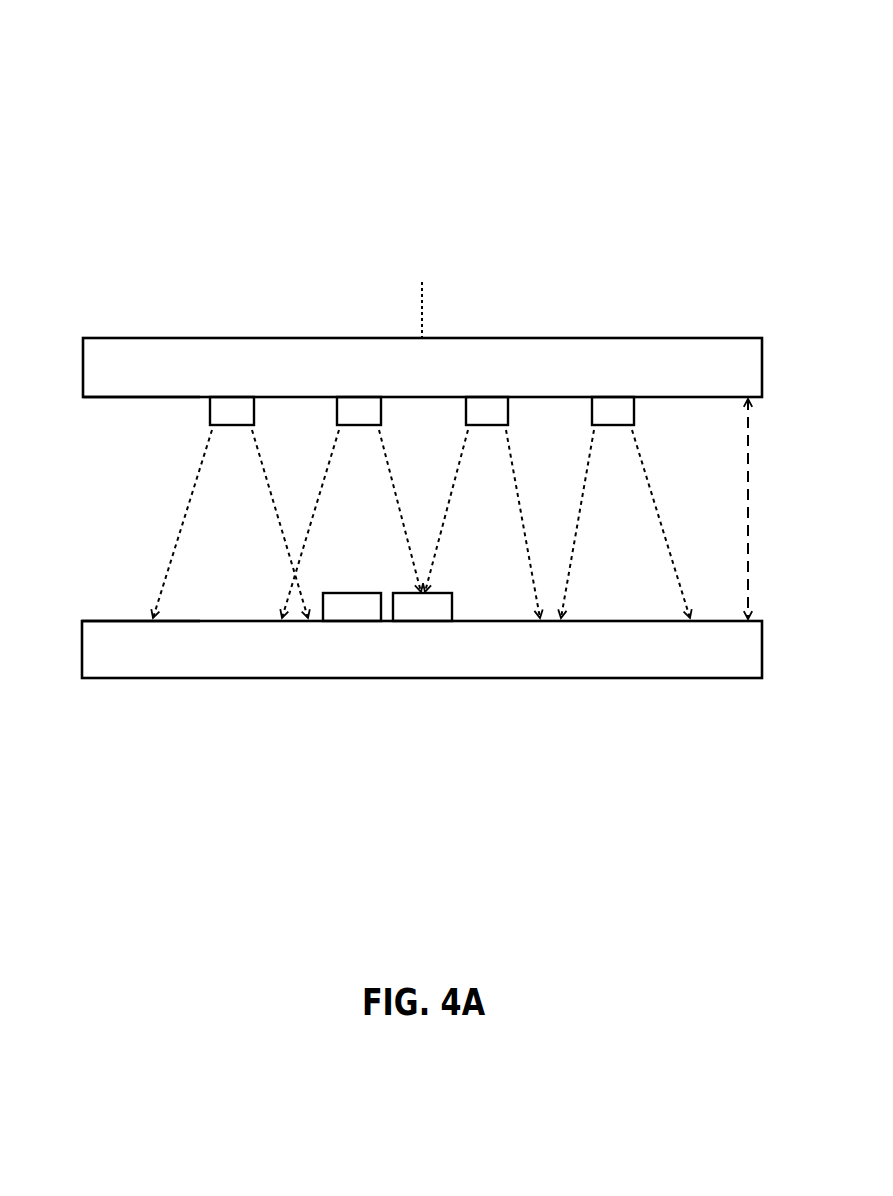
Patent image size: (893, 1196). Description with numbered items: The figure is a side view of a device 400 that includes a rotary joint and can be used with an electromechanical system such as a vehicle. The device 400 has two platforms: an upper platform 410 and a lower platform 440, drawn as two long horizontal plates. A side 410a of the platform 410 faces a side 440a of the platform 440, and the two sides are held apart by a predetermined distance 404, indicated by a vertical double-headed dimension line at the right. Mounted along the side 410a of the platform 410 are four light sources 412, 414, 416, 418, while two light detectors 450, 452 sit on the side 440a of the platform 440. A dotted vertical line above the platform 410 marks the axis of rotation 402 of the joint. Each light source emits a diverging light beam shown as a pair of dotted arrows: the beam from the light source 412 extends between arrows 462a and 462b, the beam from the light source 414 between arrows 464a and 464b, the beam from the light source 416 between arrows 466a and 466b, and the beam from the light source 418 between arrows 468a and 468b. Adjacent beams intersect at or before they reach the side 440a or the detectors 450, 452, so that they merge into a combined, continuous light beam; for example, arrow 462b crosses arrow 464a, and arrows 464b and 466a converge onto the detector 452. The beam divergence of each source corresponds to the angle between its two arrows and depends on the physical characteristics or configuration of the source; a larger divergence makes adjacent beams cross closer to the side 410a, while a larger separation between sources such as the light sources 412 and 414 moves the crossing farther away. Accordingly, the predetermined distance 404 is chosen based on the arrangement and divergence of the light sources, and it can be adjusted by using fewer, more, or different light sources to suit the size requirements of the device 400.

The device 400 is at (102, 78).
The axis of rotation 402 is at (422, 298).
The predetermined distance 404 is at (747, 510).
The platform 410 is at (133, 379).
The side of platform 410 410a is at (112, 399).
The light source 412 is at (247, 419).
The light source 414 is at (374, 419).
The light source 416 is at (502, 419).
The light source 418 is at (628, 419).
The platform 440 is at (133, 661).
The side of platform 440 440a is at (110, 620).
The light detector 450 is at (367, 615).
The light detector 452 is at (438, 615).
The arrow 462a is at (192, 490).
The arrow 462b is at (270, 491).
The arrow 464a is at (319, 489).
The arrow 464b is at (396, 491).
The arrow 466a is at (448, 490).
The arrow 466b is at (522, 491).
The arrow 468a is at (576, 490).
The arrow 468b is at (651, 491).